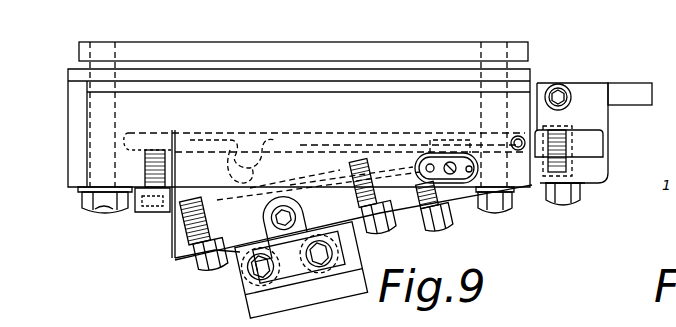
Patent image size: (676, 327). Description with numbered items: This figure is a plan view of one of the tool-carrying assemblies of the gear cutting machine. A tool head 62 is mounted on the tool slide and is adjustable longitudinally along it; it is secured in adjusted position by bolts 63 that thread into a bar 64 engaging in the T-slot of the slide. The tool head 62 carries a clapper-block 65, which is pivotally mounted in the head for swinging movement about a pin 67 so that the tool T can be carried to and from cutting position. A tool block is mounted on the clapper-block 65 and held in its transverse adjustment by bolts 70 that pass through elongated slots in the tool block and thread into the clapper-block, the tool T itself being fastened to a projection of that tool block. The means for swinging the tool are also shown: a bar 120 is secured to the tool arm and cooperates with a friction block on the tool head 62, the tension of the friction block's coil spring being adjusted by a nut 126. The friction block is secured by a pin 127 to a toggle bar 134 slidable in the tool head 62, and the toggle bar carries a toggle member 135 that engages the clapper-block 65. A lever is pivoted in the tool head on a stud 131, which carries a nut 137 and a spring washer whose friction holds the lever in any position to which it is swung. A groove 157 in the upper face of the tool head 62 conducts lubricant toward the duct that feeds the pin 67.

The bar 64 is at (348, 48).
The tool head 62 is at (299, 114).
The bolts 63 is at (103, 160).
The toggle member 135 is at (232, 177).
The clapper-block 65 is at (353, 213).
The groove 157 is at (313, 177).
The toggle bar 134 is at (365, 145).
The pin 67 is at (430, 153).
The pin 127 is at (521, 150).
The bolts 70 is at (197, 278).
The tool T is at (345, 290).
The bar 120 is at (640, 100).
The nut 126 is at (571, 91).
The studs 131 is at (566, 170).
The nut 137 is at (578, 198).